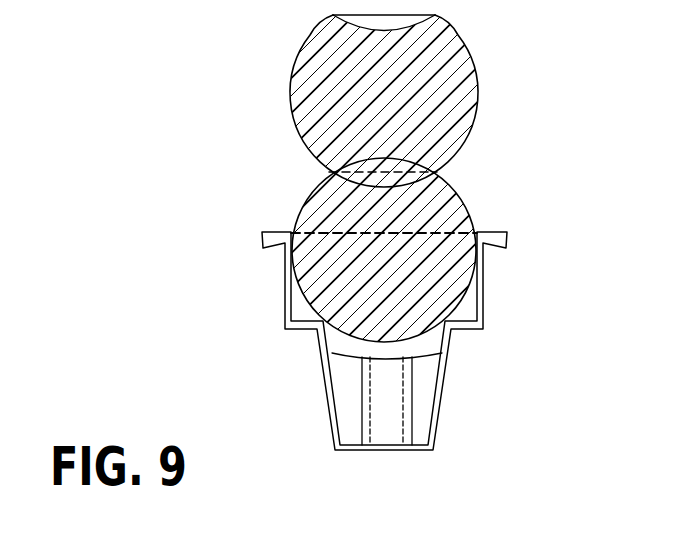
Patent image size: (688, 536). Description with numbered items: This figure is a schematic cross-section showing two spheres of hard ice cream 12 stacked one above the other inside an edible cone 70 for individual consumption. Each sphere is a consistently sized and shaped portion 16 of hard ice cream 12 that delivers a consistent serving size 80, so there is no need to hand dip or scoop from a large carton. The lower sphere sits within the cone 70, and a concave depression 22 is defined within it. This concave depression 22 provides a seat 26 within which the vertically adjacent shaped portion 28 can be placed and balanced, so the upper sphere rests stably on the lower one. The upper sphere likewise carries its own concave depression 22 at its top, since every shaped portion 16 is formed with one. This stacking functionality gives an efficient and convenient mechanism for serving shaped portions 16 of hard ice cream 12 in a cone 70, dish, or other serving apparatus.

The shaped portion 16 is at (290, 44).
The serving size 80 is at (460, 37).
The hard ice cream 12 is at (440, 90).
The seat 26 is at (322, 172).
The vertically adjacent shaped portion 28 is at (455, 207).
The concave depression 22 is at (377, 187).
The cone 70 is at (452, 384).